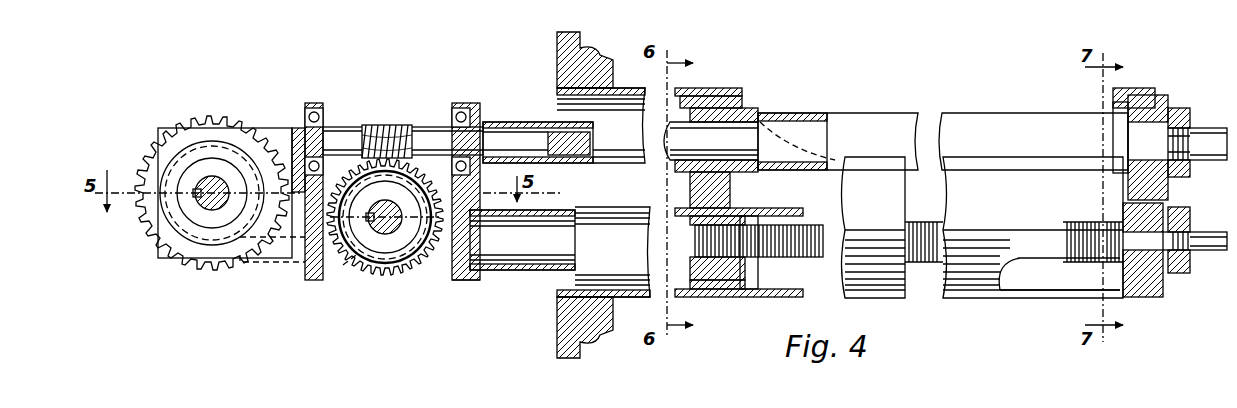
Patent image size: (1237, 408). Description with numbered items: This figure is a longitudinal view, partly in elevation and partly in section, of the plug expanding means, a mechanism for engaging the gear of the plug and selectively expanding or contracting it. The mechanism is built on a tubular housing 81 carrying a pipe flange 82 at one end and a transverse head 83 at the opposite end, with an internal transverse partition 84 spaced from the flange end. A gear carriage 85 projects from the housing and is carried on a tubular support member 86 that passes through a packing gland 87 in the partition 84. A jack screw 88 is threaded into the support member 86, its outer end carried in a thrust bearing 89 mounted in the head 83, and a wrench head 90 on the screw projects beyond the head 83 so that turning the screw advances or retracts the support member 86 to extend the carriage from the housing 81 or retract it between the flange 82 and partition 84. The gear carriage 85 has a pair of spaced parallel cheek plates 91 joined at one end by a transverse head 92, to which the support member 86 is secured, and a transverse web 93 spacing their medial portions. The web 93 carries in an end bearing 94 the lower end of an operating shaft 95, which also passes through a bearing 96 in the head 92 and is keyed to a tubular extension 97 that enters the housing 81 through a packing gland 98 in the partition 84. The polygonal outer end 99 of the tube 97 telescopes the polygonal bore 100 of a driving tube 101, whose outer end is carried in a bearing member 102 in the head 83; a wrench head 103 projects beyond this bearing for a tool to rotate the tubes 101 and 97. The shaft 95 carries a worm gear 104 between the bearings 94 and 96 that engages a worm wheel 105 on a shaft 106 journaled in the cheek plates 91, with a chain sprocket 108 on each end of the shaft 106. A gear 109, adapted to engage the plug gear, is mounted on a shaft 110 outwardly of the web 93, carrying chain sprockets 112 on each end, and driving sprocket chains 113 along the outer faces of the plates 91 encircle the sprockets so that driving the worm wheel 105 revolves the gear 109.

The tubular housing 81 is at (968, 293).
The pipe flange 82 is at (557, 63).
The transverse head 83 is at (1152, 88).
The internal transverse partition 84 is at (706, 88).
The gear carriage 85 is at (456, 279).
The tubular support member 86 is at (525, 272).
The packing gland 87 is at (700, 290).
The jack screw 88 is at (825, 222).
The thrust bearing 89 is at (1138, 297).
The wrench head 90 is at (1211, 232).
The cheek plates 91 is at (276, 259).
The transverse head 92 is at (465, 282).
The transverse web 93 is at (313, 281).
The end bearing 94 is at (318, 115).
The operating shaft 95 is at (340, 135).
The bearing 96 is at (460, 105).
The tubular extension 97 is at (521, 122).
The packing gland 98 is at (748, 120).
The outer end of the tube 99 is at (792, 130).
The polygonal bore 100 is at (838, 125).
The driving tube 101 is at (943, 120).
The bearing member 102 is at (1168, 101).
The wrench head 103 is at (1206, 128).
The worm gear 104 is at (388, 127).
The worm wheel 105 is at (382, 270).
The shaft 106 is at (398, 233).
The chain sprocket 108 is at (344, 265).
The gear 109 is at (211, 262).
The shaft 110 is at (200, 203).
The chain sprockets 112 is at (240, 262).
The driving sprocket chains 113 is at (290, 240).